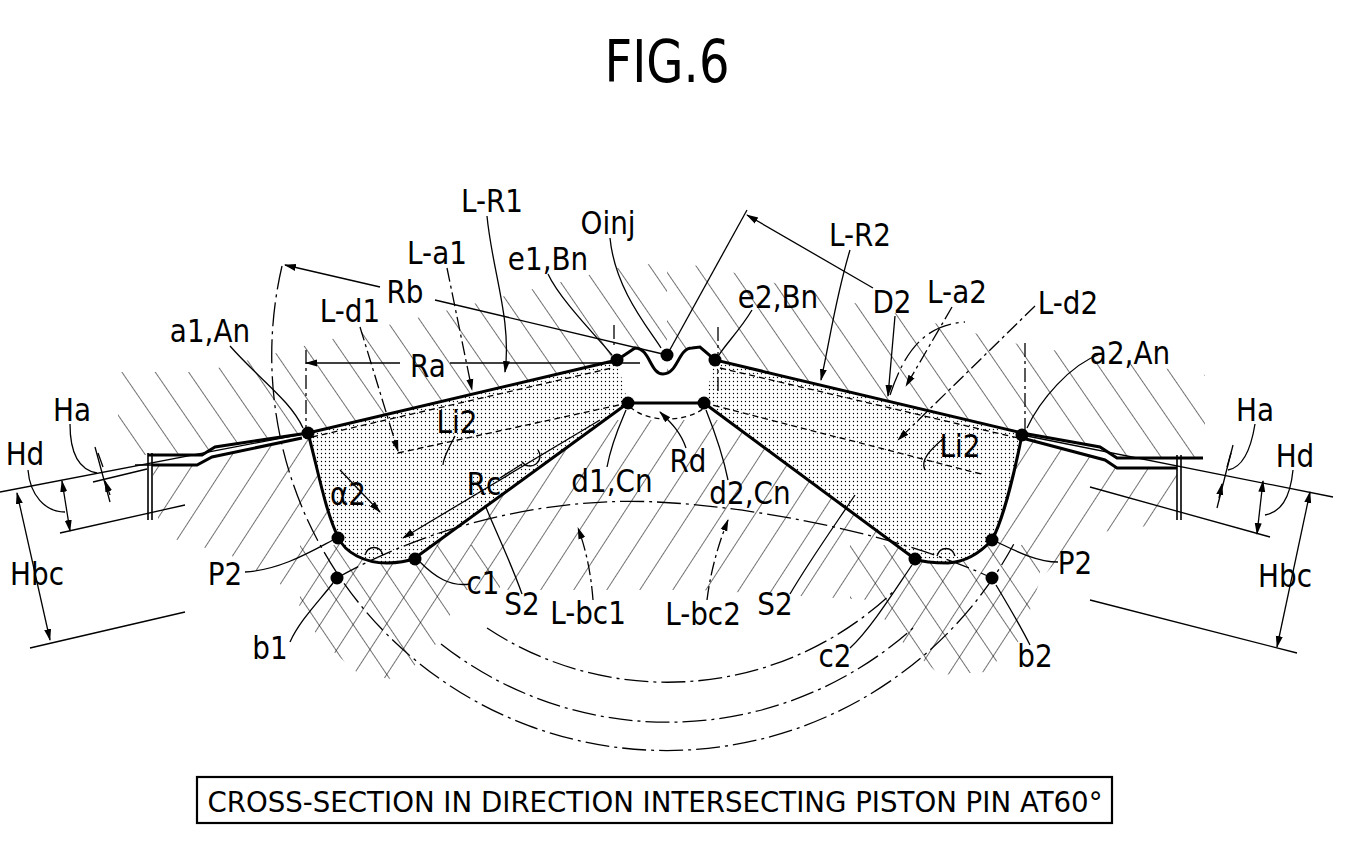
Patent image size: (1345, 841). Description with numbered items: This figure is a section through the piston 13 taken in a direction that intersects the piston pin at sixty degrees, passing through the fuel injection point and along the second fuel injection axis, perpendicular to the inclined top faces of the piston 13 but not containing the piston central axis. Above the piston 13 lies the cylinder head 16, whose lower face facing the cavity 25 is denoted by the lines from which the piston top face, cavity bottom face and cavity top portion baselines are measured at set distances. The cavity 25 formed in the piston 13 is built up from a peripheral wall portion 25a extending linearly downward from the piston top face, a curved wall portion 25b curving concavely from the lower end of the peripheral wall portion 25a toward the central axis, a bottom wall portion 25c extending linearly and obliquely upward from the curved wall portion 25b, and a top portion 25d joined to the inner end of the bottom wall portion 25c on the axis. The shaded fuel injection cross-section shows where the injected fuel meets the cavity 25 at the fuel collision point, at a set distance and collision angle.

The piston 13 is at (1148, 500).
The cylinder head 16 is at (1165, 415).
The cavity 25 is at (633, 547).
The peripheral wall portion 25a is at (316, 470).
The curved wall portion 25b is at (385, 568).
The bottom wall portion 25c is at (499, 498).
The top portion 25d is at (710, 398).